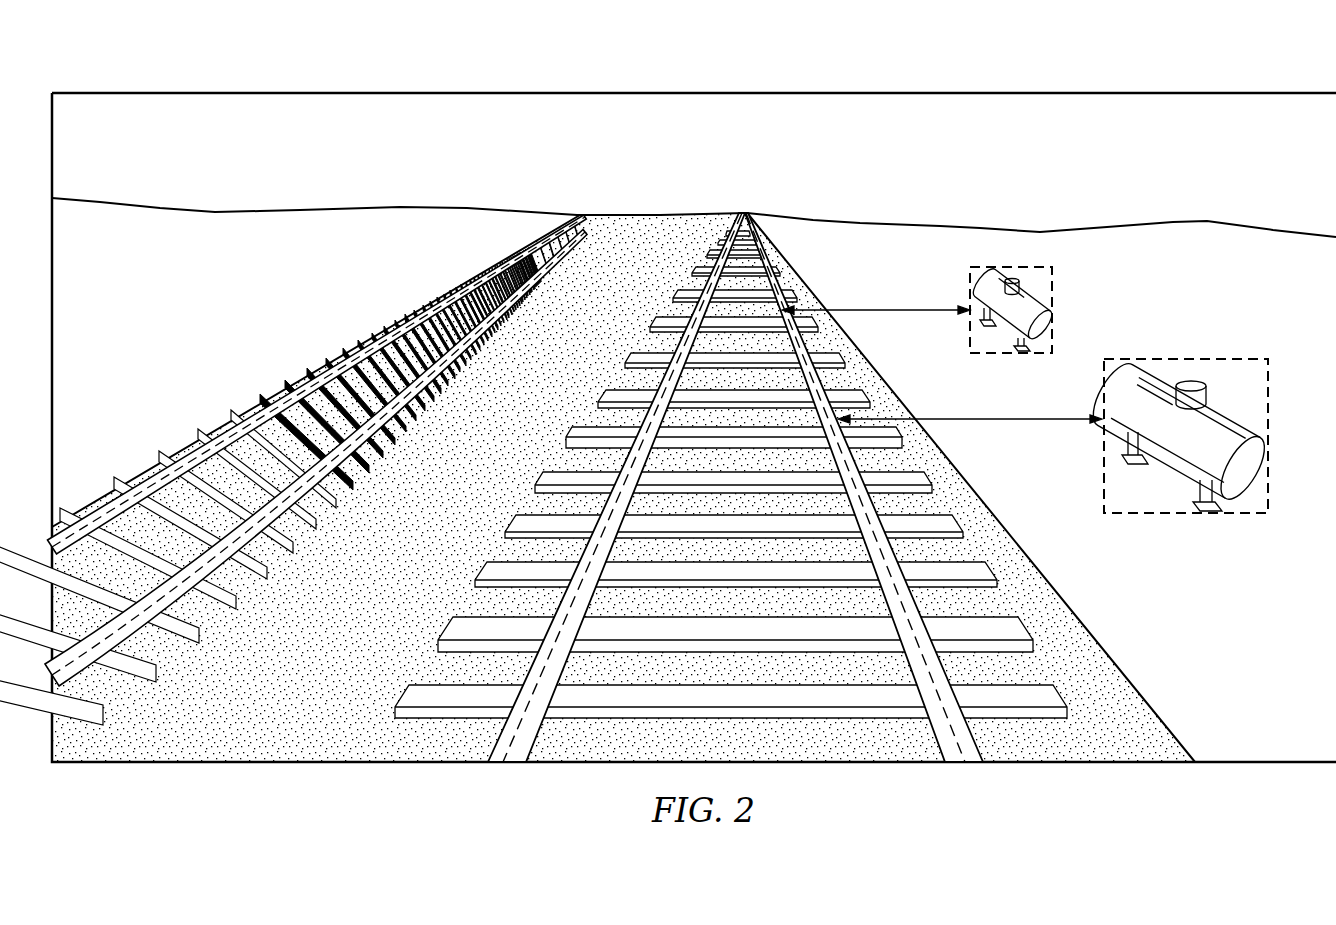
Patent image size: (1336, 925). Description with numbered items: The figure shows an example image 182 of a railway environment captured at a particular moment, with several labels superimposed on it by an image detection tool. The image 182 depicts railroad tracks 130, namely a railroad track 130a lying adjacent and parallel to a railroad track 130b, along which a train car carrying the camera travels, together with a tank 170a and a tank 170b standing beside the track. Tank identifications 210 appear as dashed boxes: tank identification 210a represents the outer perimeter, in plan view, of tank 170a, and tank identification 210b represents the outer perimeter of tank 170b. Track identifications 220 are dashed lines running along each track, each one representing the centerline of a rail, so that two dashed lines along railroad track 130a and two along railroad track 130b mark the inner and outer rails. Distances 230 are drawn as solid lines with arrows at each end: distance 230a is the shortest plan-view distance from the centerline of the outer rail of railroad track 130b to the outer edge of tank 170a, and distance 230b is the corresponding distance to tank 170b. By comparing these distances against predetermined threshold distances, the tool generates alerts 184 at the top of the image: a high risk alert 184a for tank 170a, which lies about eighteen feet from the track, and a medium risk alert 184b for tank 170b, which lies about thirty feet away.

The image 182 is at (668, 400).
The alerts 184 is at (794, 152).
The high risk alert 184a is at (472, 132).
The medium risk alert 184b is at (472, 166).
The railroad tracks 130 is at (533, 487).
The railroad track 130a is at (205, 590).
The railroad track 130b is at (600, 394).
The tank 170a is at (1233, 417).
The tank 170b is at (1038, 345).
The tank identifications 210 is at (1152, 464).
The tank identification 210a is at (1164, 458).
The tank identification 210b is at (1129, 333).
The track identifications 220 is at (278, 500).
The distances 230 is at (942, 365).
The distance 230a is at (970, 453).
The distance 230b is at (876, 310).